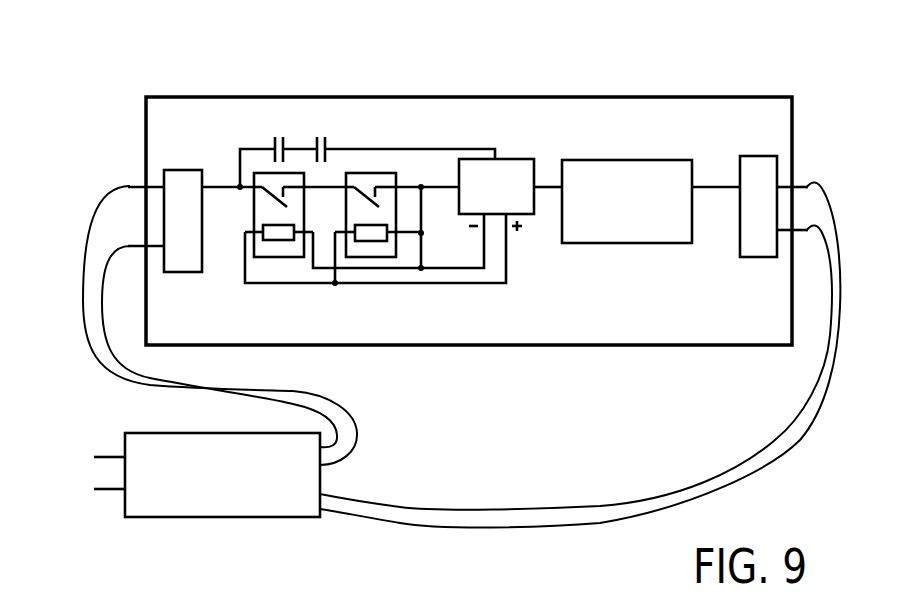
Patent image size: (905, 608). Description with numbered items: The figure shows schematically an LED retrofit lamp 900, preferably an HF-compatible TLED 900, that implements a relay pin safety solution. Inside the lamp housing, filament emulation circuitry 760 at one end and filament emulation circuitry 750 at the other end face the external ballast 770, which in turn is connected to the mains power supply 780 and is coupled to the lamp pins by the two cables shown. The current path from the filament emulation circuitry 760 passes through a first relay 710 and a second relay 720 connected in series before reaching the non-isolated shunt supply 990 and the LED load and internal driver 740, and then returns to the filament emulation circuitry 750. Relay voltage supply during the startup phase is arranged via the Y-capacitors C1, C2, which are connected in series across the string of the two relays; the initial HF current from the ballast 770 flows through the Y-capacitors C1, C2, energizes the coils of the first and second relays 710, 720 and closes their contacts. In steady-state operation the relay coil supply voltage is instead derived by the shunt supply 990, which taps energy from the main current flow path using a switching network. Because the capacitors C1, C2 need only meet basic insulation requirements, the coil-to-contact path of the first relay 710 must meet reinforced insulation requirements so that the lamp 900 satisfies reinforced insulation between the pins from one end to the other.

The LED lamp 900 is at (662, 88).
The filament emulation circuitry 760 is at (190, 170).
The first relay 710 is at (253, 206).
The second relay 720 is at (372, 259).
The shunt supply 990 is at (515, 159).
The LED load and internal driver 740 is at (593, 160).
The filament emulation circuitry 750 is at (755, 156).
The ballast 770 is at (223, 517).
The mains power supply 780 is at (99, 473).
The Y-capacitor C1 is at (279, 135).
The Y-capacitor C2 is at (322, 135).